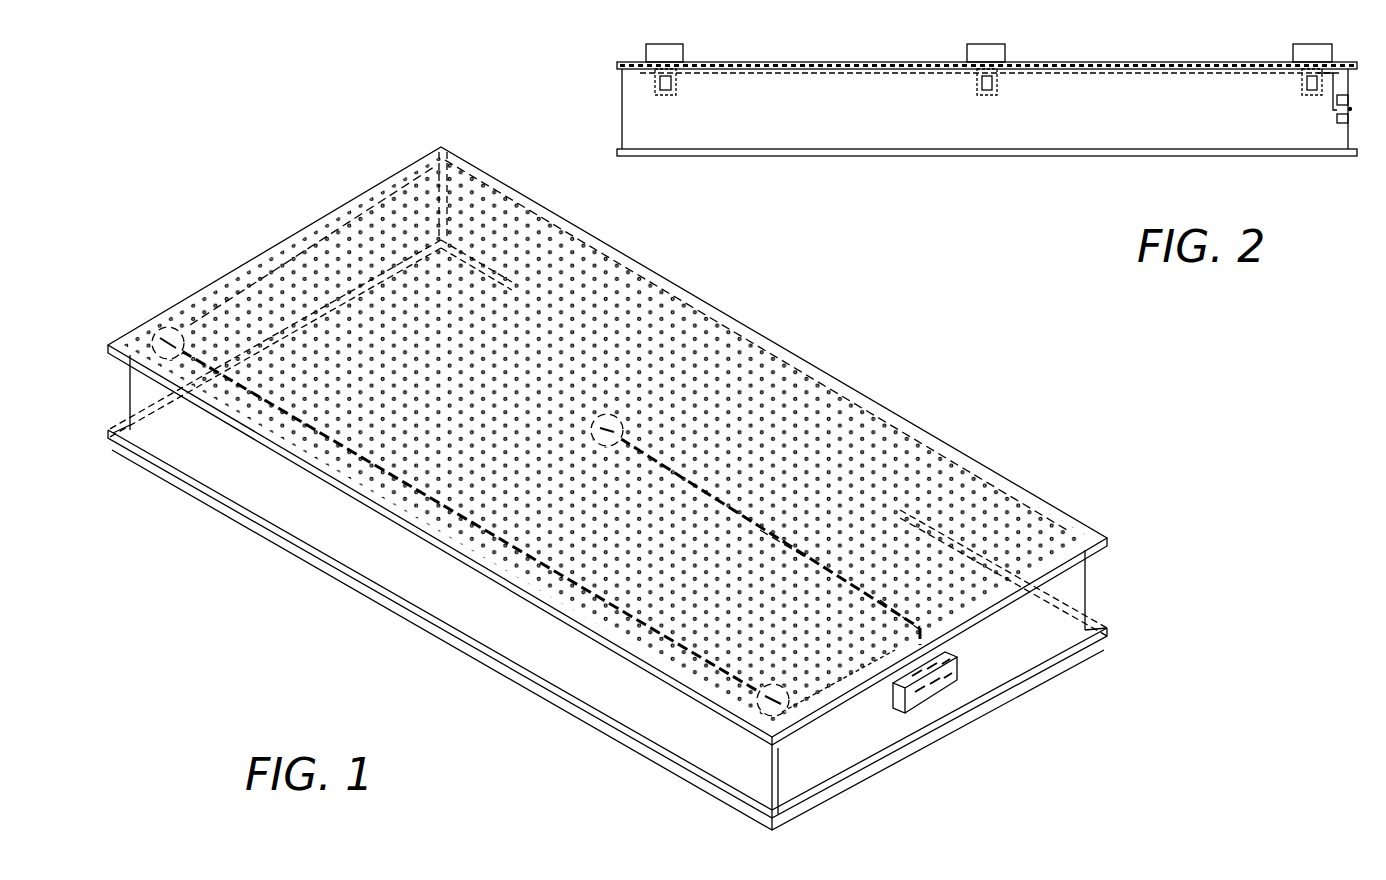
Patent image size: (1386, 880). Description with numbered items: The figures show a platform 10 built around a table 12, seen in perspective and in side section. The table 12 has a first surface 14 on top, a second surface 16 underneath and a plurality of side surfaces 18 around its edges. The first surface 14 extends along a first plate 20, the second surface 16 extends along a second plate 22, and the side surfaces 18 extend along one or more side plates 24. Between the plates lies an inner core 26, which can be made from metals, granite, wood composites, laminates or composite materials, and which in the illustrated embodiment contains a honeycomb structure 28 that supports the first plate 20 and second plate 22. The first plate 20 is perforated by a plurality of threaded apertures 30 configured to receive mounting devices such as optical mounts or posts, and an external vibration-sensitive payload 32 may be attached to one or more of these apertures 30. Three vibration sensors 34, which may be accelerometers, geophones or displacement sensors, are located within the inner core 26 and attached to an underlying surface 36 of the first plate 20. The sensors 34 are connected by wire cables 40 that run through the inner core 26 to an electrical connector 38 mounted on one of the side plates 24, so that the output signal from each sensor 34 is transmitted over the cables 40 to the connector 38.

In FIG. 1, the platform 10 is at (245, 600).
In FIG. 1, the table 12 is at (648, 704).
In FIG. 1, the first surface 14 is at (800, 357).
In FIG. 1, the second surface 16 is at (1032, 625).
In FIG. 1, the side surfaces 18 is at (247, 478).
In FIG. 1, the first plate 20 is at (825, 710).
In FIG. 2, the first plate 20 is at (622, 62).
In FIG. 1, the second plate 22 is at (1080, 650).
In FIG. 2, the second plate 22 is at (660, 152).
In FIG. 1, the side plates 24 is at (771, 777).
In FIG. 2, the inner core 26 is at (803, 138).
In FIG. 2, the honeycomb structure 28 is at (1125, 118).
In FIG. 1, the threaded apertures 30 is at (640, 638).
In FIG. 2, the vibration-sensitive payload 32 is at (667, 52).
In FIG. 1, the vibration sensors 34 is at (167, 335).
In FIG. 2, the vibration sensors 34 is at (676, 85).
In FIG. 2, the underlying surface 36 is at (640, 72).
In FIG. 1, the electrical connector 38 is at (920, 700).
In FIG. 2, the electrical connector 38 is at (1347, 112).
In FIG. 1, the wire cables 40 is at (807, 558).
In FIG. 2, the wire cables 40 is at (900, 73).